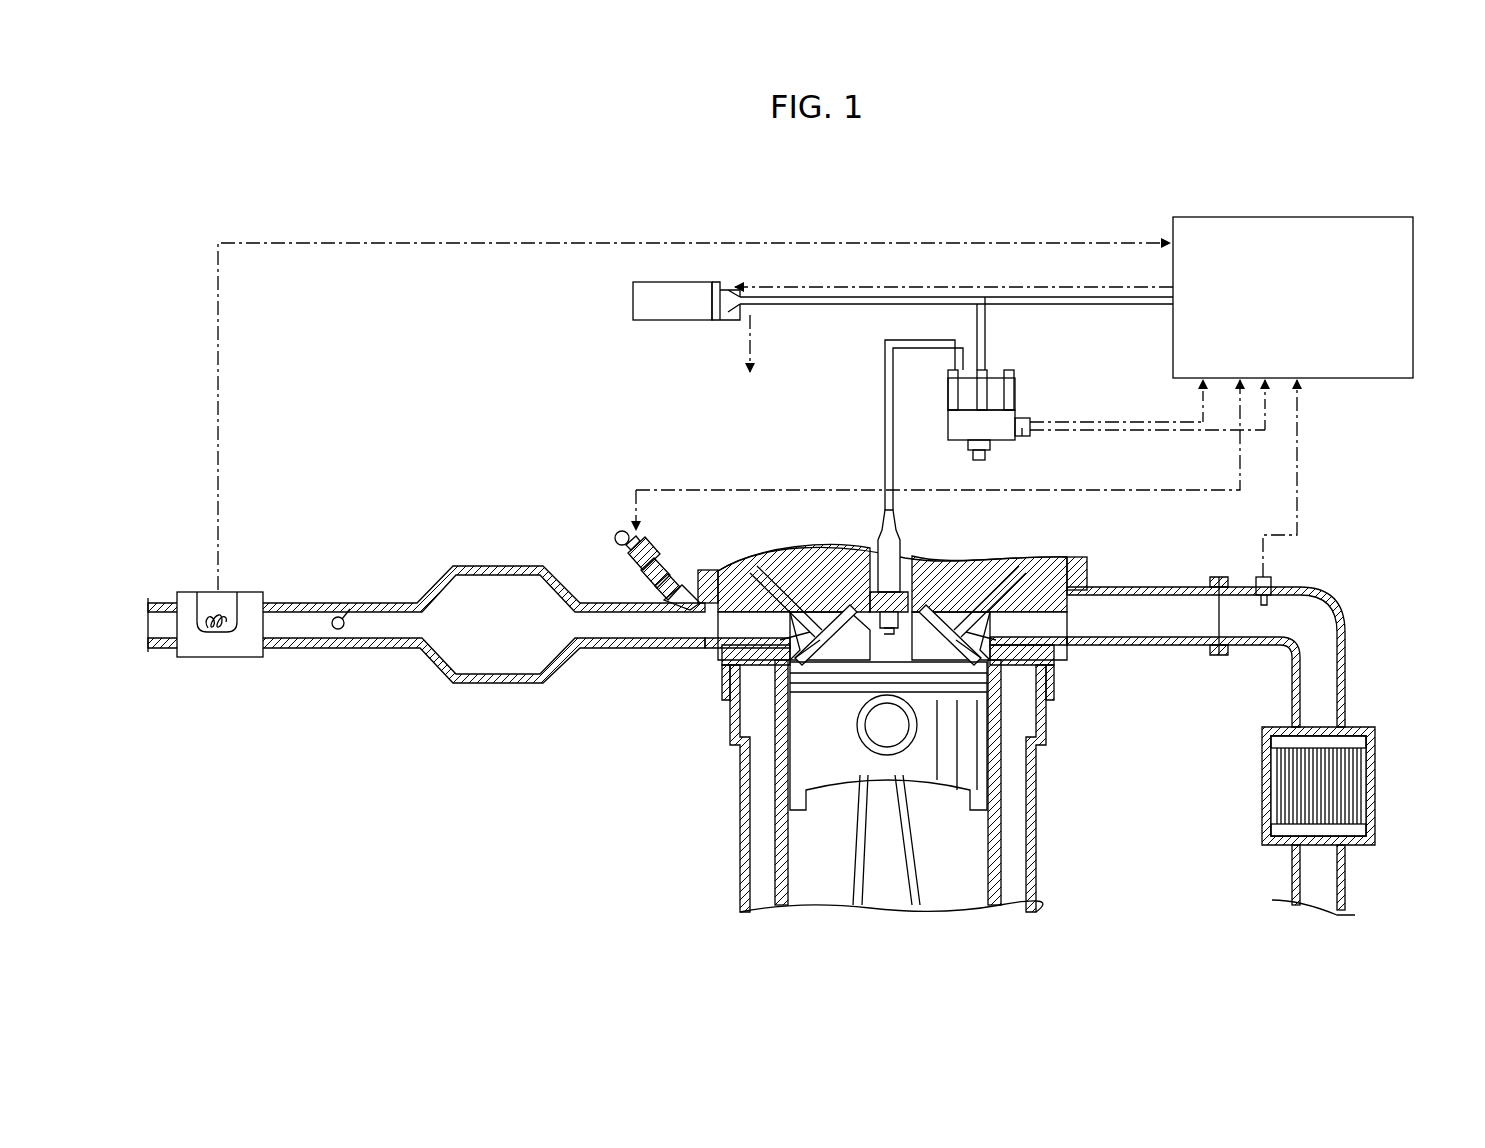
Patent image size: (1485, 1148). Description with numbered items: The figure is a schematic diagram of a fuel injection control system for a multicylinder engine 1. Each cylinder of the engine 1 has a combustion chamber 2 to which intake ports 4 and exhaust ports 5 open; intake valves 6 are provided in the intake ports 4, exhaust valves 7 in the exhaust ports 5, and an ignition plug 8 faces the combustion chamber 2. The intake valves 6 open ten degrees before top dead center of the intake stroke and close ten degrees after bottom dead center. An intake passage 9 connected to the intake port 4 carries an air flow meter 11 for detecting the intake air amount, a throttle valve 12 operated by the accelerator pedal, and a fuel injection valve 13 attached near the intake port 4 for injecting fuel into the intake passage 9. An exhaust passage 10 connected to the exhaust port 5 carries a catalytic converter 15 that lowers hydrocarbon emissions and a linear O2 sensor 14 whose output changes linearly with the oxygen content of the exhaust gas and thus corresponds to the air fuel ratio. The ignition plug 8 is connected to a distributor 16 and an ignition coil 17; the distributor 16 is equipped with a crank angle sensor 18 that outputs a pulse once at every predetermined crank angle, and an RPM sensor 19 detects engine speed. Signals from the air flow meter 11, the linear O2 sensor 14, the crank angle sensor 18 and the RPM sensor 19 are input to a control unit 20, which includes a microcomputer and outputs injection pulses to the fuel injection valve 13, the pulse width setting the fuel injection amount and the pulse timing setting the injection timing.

The multicylinder engine 1 is at (712, 800).
The combustion chamber 2 is at (908, 632).
The intake port 4 is at (705, 640).
The exhaust port 5 is at (1058, 628).
The intake valve 6 is at (820, 625).
The exhaust valve 7 is at (958, 612).
The ignition plug 8 is at (887, 606).
The intake passage 9 is at (632, 615).
The exhaust passage 10 is at (1163, 618).
The air flow meter 11 is at (238, 657).
The throttle valve 12 is at (334, 630).
The fuel injection valve 13 is at (660, 578).
The linear O2 sensor 14 is at (1272, 582).
The catalytic converter 15 is at (1378, 808).
The distributor 16 is at (1000, 428).
The ignition coil 17 is at (668, 320).
The crank angle sensor 18 is at (1022, 422).
The RPM sensor 19 is at (1022, 436).
The control unit 20 is at (1270, 217).